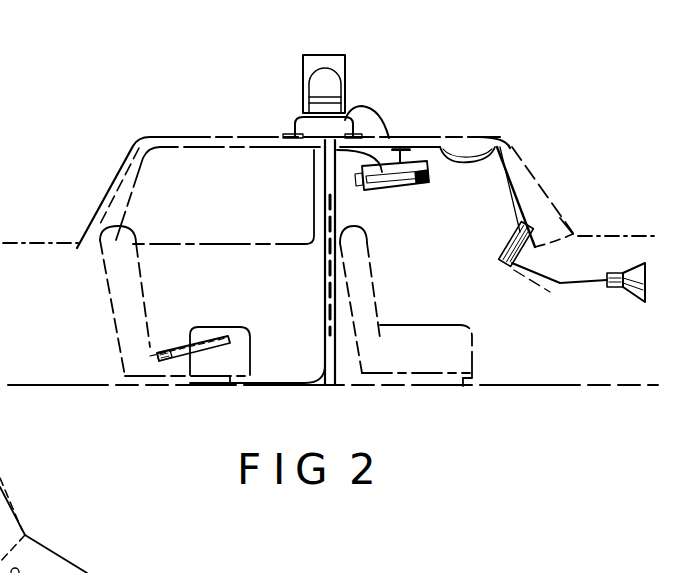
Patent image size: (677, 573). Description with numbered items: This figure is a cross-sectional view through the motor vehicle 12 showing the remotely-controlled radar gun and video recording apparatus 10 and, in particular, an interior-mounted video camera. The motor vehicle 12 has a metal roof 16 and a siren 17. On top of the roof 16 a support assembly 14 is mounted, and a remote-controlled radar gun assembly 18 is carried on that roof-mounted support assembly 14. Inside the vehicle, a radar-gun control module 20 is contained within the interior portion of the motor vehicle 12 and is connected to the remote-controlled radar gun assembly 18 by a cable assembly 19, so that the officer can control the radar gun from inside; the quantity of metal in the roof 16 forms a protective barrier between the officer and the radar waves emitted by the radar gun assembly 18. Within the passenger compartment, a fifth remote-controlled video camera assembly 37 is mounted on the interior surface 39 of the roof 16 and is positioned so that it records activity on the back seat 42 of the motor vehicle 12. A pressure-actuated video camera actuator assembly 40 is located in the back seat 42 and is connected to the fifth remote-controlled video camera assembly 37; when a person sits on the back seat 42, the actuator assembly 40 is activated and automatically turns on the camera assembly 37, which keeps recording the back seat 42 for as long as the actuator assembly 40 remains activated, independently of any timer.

The remotely-controlled radar gun and video recording apparatus 10 is at (377, 112).
The motor vehicle 12 is at (577, 210).
The support assembly 14 is at (360, 111).
The roof 16 is at (177, 137).
The siren 17 is at (620, 288).
The remote-controlled radar gun assembly 18 is at (286, 95).
The cable assembly 19 is at (392, 138).
The radar-gun control module 20 is at (500, 253).
The fifth remote-controlled video camera assembly 37 is at (377, 183).
The interior surface 39 is at (502, 142).
The pressure-actuated video camera actuator assembly 40 is at (207, 336).
The back seat 42 is at (156, 354).